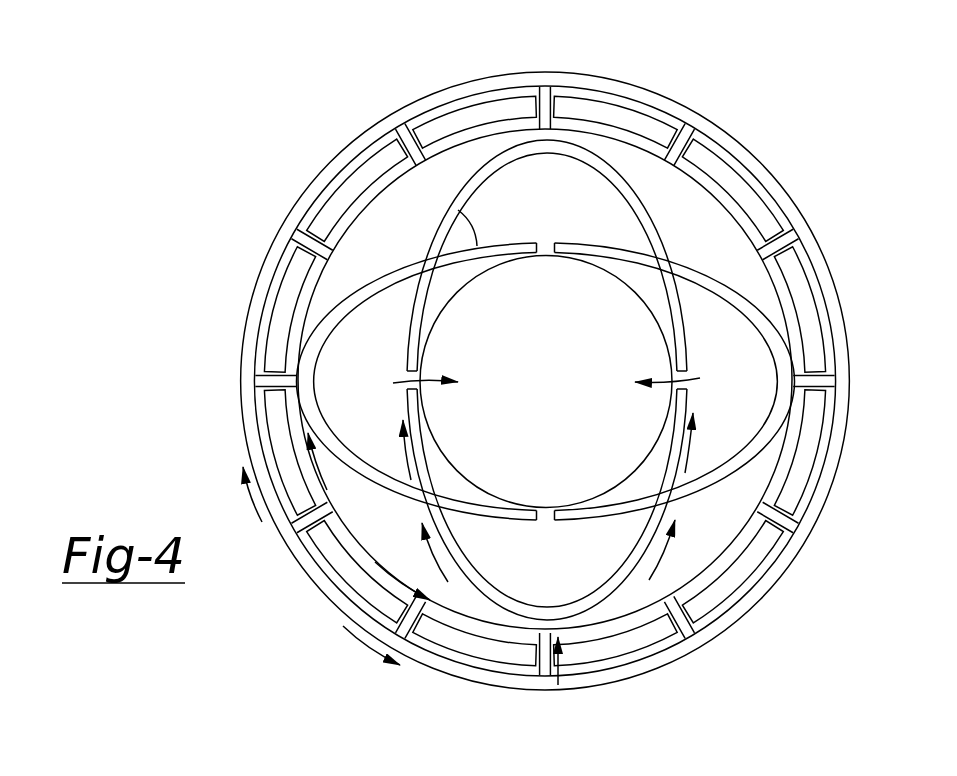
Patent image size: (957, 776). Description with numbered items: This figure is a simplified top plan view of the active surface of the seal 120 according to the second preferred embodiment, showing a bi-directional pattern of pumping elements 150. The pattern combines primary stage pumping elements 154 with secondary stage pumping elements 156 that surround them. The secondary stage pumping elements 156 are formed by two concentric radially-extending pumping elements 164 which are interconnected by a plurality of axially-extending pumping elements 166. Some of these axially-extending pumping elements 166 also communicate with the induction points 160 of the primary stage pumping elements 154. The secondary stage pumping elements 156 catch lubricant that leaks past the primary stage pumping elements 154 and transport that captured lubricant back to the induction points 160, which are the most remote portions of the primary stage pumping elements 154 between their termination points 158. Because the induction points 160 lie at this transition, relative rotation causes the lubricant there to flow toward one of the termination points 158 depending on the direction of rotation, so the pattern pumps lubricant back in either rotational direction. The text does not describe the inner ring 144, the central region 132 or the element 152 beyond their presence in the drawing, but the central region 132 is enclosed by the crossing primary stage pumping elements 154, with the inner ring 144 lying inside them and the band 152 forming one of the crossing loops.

The seal 120 is at (270, 167).
The bi-directional pattern of pumping elements 150 is at (202, 263).
The secondary stage pumping elements 156 is at (778, 240).
The radially-extending pumping elements 164 is at (473, 130).
The axially-extending pumping elements 166 is at (400, 157).
The induction points 160 is at (543, 141).
The horizontal elliptical band 152 is at (563, 257).
The primary stage pumping elements 154 is at (642, 208).
The termination points 158 is at (412, 375).
The central hub ring 144 is at (443, 462).
The central bore 132 is at (536, 399).